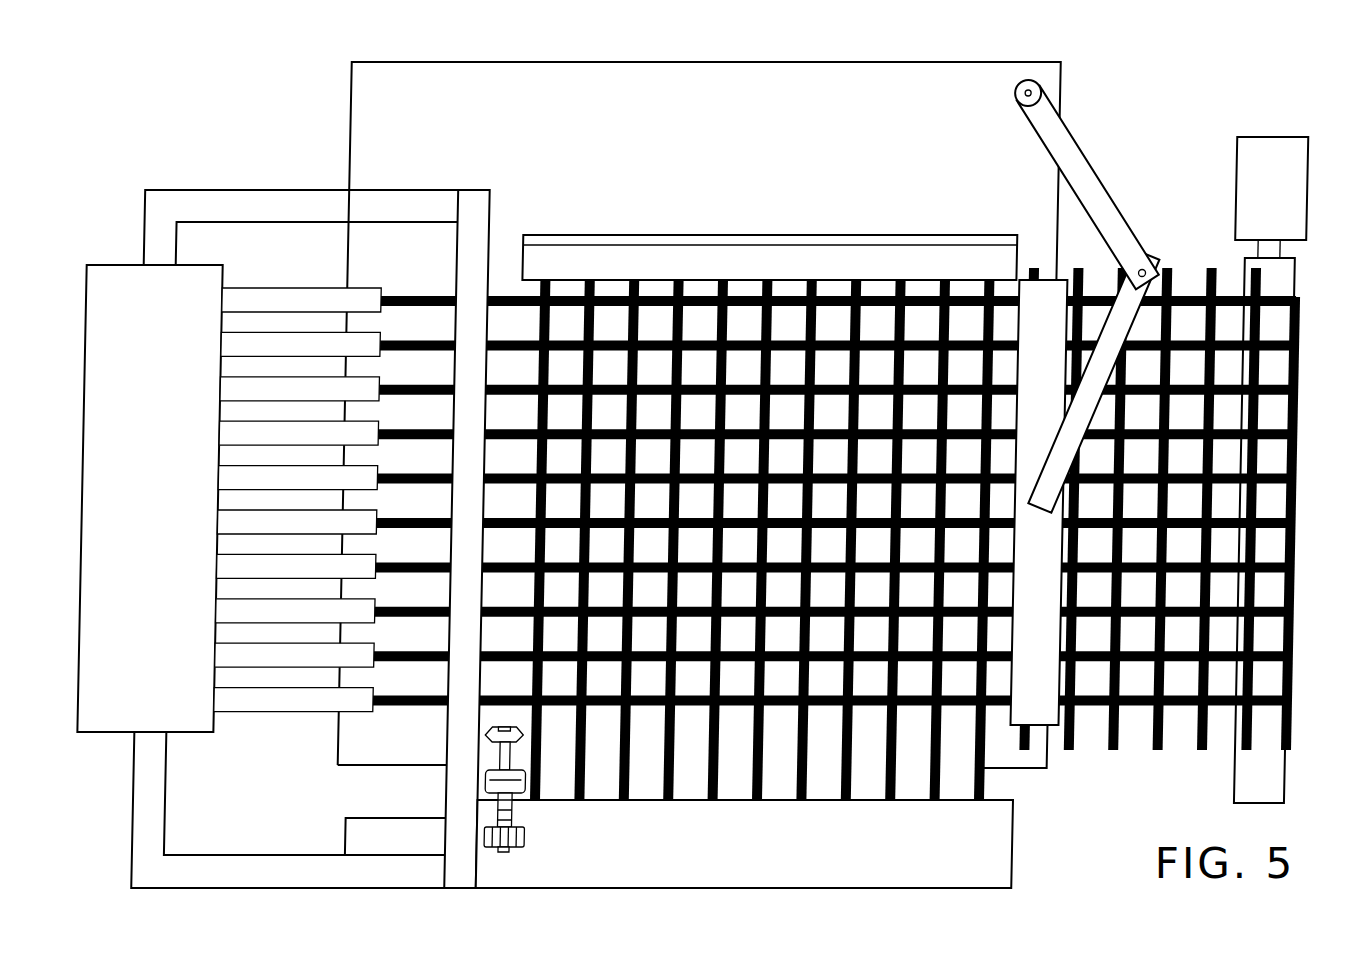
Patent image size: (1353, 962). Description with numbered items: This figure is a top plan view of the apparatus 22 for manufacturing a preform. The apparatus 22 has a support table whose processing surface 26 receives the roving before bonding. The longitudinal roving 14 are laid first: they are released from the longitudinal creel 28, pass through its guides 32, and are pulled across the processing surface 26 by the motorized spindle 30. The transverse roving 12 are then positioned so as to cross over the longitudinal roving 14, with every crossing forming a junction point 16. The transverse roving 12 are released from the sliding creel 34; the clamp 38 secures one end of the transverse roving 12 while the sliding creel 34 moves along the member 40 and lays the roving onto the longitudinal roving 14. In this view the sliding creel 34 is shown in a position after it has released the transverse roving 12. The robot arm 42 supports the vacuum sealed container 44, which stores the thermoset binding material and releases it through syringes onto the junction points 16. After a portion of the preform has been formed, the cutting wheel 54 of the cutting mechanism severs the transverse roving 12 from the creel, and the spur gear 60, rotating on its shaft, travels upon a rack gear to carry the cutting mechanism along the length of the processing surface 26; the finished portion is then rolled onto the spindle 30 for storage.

The transverse roving 12 is at (990, 762).
The longitudinal roving 14 is at (911, 705).
The junction points 16 is at (771, 581).
The apparatus 22 is at (229, 143).
The processing surface 26 is at (697, 146).
The longitudinal creel 28 is at (121, 509).
The motorized spindle 30 is at (1272, 777).
The guides 32 is at (268, 299).
The sliding creel 34 is at (717, 866).
The clamp 38 is at (770, 258).
The member 40 is at (458, 745).
The robot arm 42 is at (1119, 322).
The vacuum sealed container 44 is at (1049, 712).
The cutting wheel 54 is at (528, 733).
The spur gear 60 is at (512, 853).